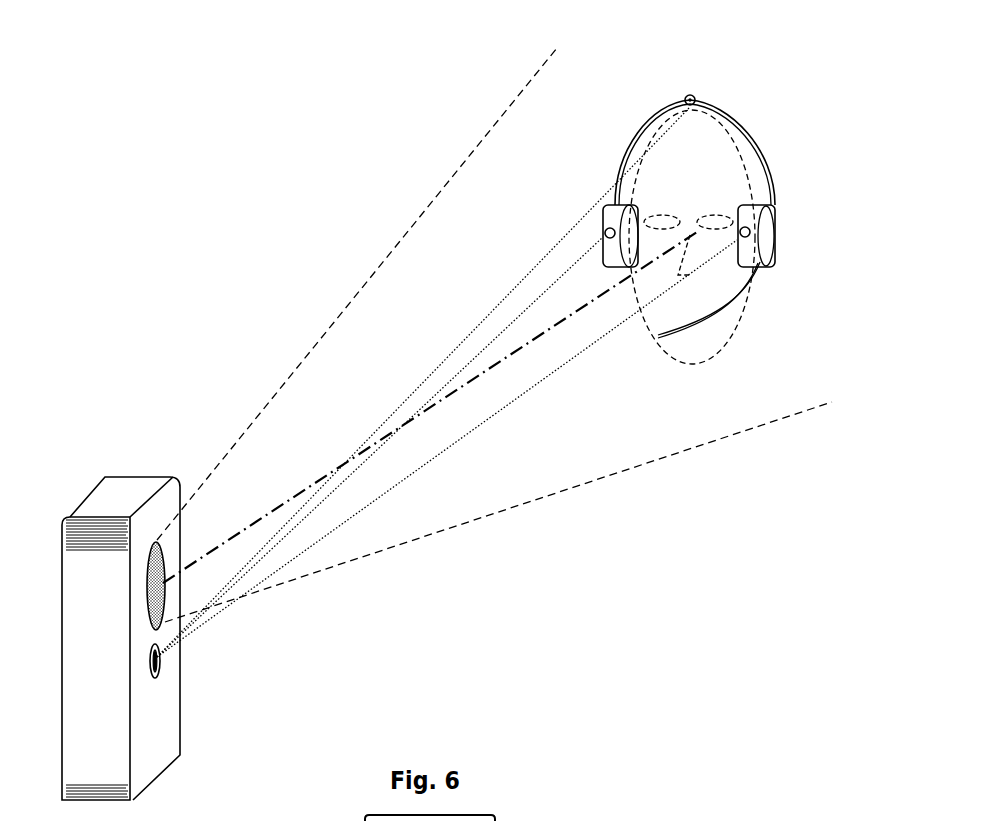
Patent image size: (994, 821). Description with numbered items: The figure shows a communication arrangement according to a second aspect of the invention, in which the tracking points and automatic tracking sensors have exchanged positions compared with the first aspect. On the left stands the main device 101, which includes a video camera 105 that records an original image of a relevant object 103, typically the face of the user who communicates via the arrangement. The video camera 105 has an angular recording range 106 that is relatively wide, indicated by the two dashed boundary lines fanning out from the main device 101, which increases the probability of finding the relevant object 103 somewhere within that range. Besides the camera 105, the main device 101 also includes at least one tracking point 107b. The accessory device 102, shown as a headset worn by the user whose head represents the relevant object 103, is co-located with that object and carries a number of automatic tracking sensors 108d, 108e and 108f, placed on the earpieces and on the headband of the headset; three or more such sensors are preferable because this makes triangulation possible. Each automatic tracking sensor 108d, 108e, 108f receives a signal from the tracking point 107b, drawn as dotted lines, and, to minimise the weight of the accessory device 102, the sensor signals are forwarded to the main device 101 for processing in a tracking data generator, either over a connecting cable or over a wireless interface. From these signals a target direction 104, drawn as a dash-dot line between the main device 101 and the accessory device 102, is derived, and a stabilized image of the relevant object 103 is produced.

The main device 101 is at (145, 477).
The accessory device 102 is at (680, 103).
The relevant object 103 is at (637, 158).
The target direction 104 is at (507, 357).
The video camera 105 is at (163, 598).
The angular recording range 106 is at (390, 257).
The tracking point 107b is at (159, 674).
The automatic tracking sensor 108d is at (606, 230).
The automatic tracking sensor 108e is at (695, 95).
The automatic tracking sensor 108f is at (750, 240).